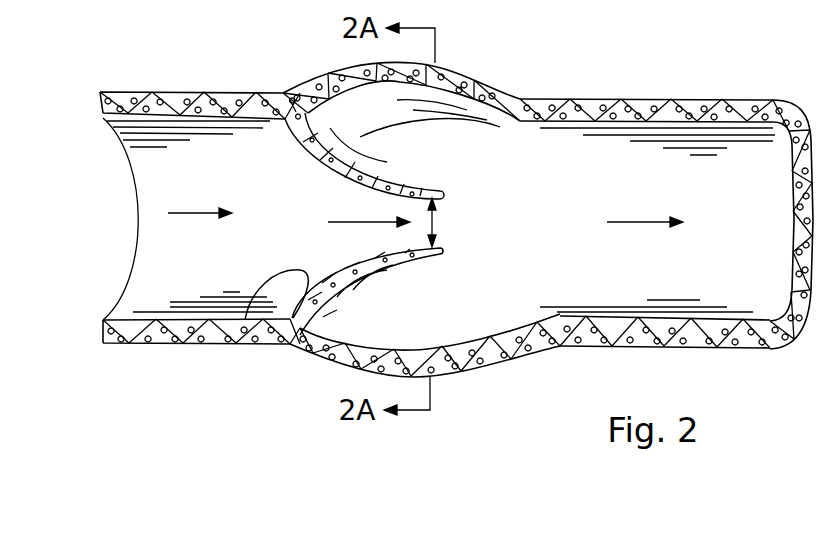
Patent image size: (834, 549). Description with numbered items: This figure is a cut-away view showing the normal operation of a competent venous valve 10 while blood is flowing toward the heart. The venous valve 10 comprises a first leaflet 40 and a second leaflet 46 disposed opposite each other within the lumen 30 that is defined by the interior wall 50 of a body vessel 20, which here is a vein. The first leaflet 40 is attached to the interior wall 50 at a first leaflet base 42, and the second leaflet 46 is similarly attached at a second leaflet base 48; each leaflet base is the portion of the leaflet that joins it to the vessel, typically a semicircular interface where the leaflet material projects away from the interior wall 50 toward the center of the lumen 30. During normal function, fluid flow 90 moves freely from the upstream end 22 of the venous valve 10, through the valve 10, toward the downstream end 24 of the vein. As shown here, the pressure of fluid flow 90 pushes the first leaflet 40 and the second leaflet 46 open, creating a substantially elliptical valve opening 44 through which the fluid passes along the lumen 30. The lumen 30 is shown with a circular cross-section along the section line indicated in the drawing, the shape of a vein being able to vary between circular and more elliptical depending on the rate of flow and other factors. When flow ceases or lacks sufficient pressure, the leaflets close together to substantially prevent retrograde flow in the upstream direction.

The venous valve 10 is at (197, 370).
The body vessel 20 is at (132, 92).
The upstream end 22 is at (138, 348).
The downstream end 24 is at (733, 350).
The lumen 30 is at (728, 170).
The first leaflet 40 is at (330, 150).
The first leaflet base 42 is at (283, 93).
The valve opening 44 is at (433, 225).
The second leaflet 46 is at (241, 318).
The second leaflet base 48 is at (269, 308).
The interior wall 50 is at (208, 92).
The fluid flow 90 is at (140, 200).